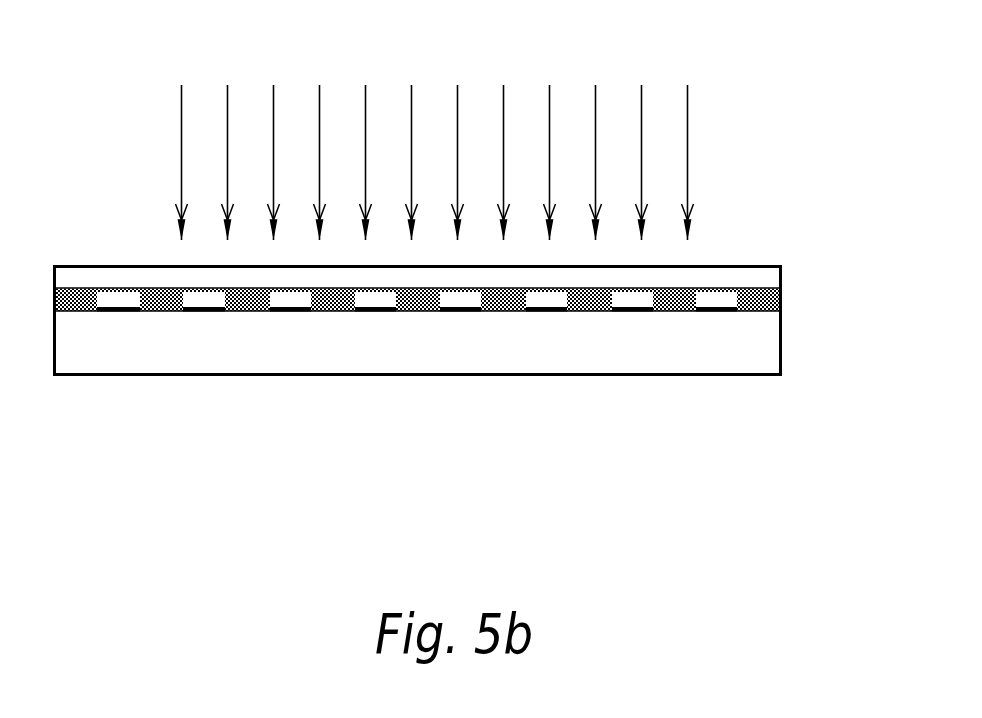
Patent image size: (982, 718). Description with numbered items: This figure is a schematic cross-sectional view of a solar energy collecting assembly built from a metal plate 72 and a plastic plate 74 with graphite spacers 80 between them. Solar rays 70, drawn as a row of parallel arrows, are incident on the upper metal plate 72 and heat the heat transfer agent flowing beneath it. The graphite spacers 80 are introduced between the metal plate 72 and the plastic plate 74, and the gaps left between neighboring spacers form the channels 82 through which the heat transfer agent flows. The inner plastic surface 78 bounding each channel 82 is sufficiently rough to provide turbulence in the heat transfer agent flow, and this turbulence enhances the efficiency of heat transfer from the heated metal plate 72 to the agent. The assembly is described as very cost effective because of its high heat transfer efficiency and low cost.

The solar rays 70 is at (435, 134).
The metal plate 72 is at (766, 278).
The plastic plate 74 is at (766, 348).
The inner plastic surface 78 is at (537, 312).
The graphite spacers 80 is at (327, 312).
The channels 82 is at (633, 297).